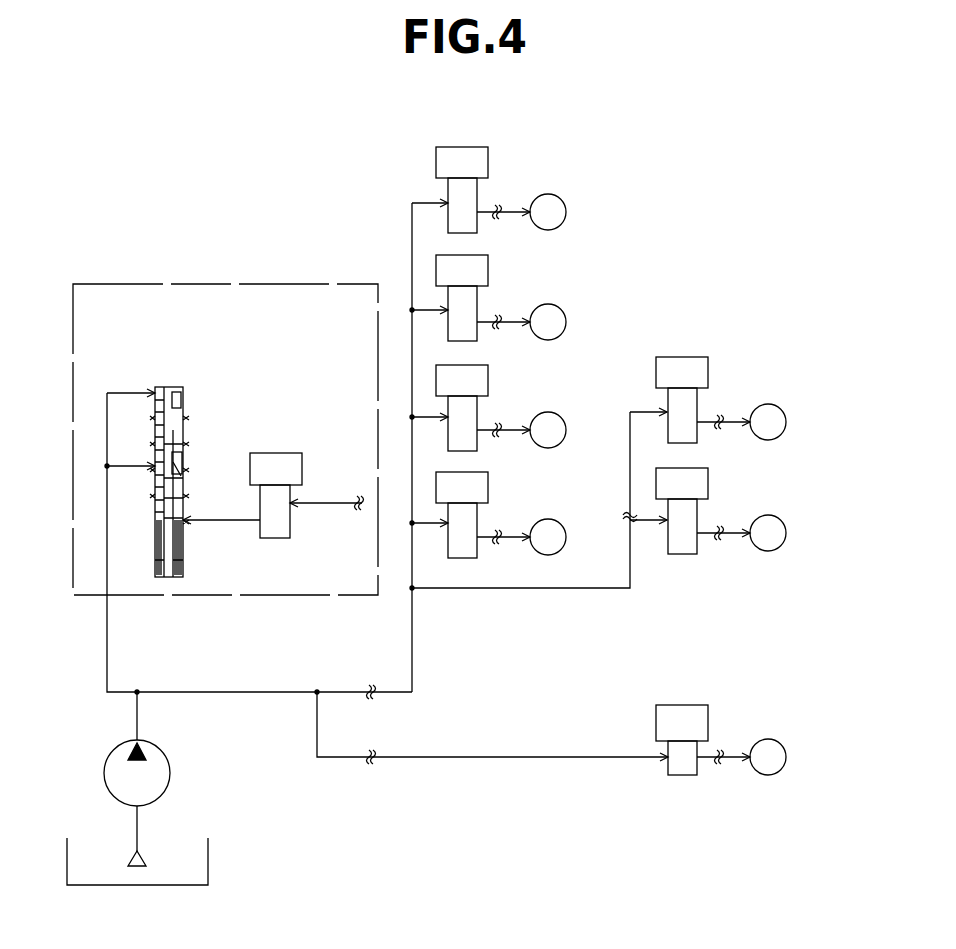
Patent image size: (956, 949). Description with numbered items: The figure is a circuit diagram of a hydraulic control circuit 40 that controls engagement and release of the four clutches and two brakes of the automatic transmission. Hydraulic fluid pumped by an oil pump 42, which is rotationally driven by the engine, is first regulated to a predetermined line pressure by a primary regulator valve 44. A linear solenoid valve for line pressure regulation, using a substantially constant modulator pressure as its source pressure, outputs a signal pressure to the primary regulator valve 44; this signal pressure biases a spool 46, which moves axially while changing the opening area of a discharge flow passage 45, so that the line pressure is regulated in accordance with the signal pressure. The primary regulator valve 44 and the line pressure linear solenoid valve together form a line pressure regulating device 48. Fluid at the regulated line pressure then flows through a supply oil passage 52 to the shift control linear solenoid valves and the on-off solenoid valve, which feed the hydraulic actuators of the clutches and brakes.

The hydraulic control circuit 40 is at (673, 160).
The oil pump 42 is at (112, 773).
The primary regulator valve 44 is at (160, 385).
The discharge flow passage 45 is at (186, 442).
The spool 46 is at (180, 400).
The line pressure regulating device 48 is at (120, 283).
The supply oil passage 52 is at (228, 692).